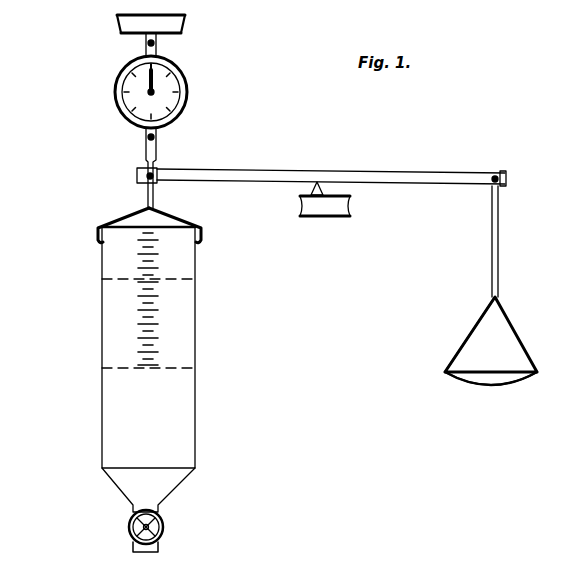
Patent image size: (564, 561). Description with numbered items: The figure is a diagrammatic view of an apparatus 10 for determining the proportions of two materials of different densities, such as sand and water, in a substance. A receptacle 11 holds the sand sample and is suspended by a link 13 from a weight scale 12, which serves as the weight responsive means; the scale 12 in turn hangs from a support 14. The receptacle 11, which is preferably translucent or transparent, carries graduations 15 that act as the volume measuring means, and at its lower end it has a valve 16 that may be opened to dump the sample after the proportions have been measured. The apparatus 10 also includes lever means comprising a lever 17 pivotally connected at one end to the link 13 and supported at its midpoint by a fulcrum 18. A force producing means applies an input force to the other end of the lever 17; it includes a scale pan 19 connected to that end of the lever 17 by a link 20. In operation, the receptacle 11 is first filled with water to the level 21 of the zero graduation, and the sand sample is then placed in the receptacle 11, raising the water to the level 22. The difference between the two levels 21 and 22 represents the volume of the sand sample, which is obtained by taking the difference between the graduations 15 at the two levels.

The apparatus 10 is at (72, 213).
The receptacle 11 is at (100, 409).
The weight scale 12 is at (117, 92).
The link 13 is at (146, 156).
The support 14 is at (179, 28).
The graduations 15 is at (136, 325).
The valve 16 is at (130, 528).
The lever 17 is at (244, 170).
The fulcrum 18 is at (326, 186).
The scale pan 19 is at (488, 386).
The link 20 is at (498, 245).
The level 21 is at (178, 367).
The level 22 is at (180, 279).